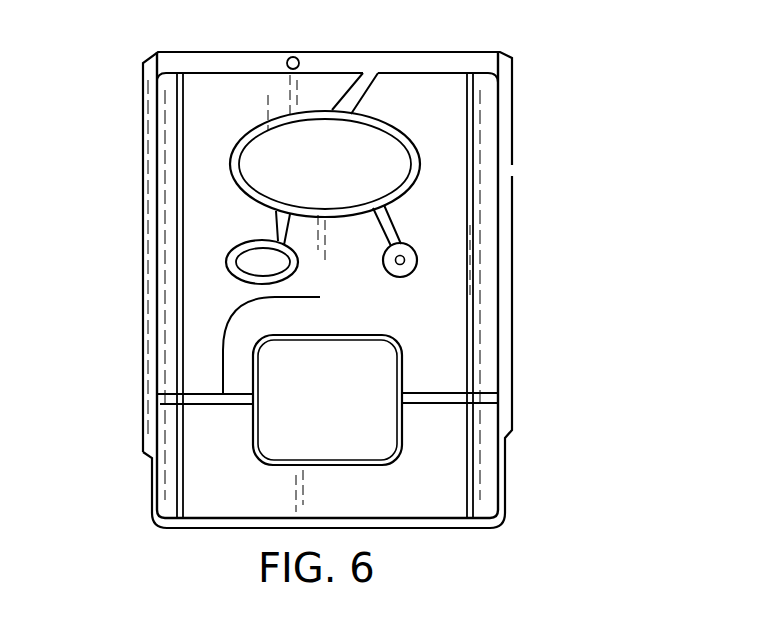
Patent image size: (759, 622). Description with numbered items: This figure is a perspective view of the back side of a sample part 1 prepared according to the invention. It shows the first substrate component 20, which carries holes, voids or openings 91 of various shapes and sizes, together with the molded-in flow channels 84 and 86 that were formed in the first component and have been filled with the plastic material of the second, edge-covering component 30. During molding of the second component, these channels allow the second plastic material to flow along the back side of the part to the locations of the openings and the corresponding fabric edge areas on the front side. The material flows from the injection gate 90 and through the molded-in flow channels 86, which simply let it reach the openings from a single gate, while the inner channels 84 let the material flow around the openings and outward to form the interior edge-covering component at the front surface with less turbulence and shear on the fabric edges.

The sample part 1 is at (114, 61).
The first substrate component 20 is at (442, 154).
The second molded-on edge-covering component 30 is at (416, 62).
The molded-in flow channels 84 is at (413, 173).
The molded-in flow channels 86 is at (343, 93).
The injection gate 90 is at (289, 57).
The openings 91 is at (283, 167).